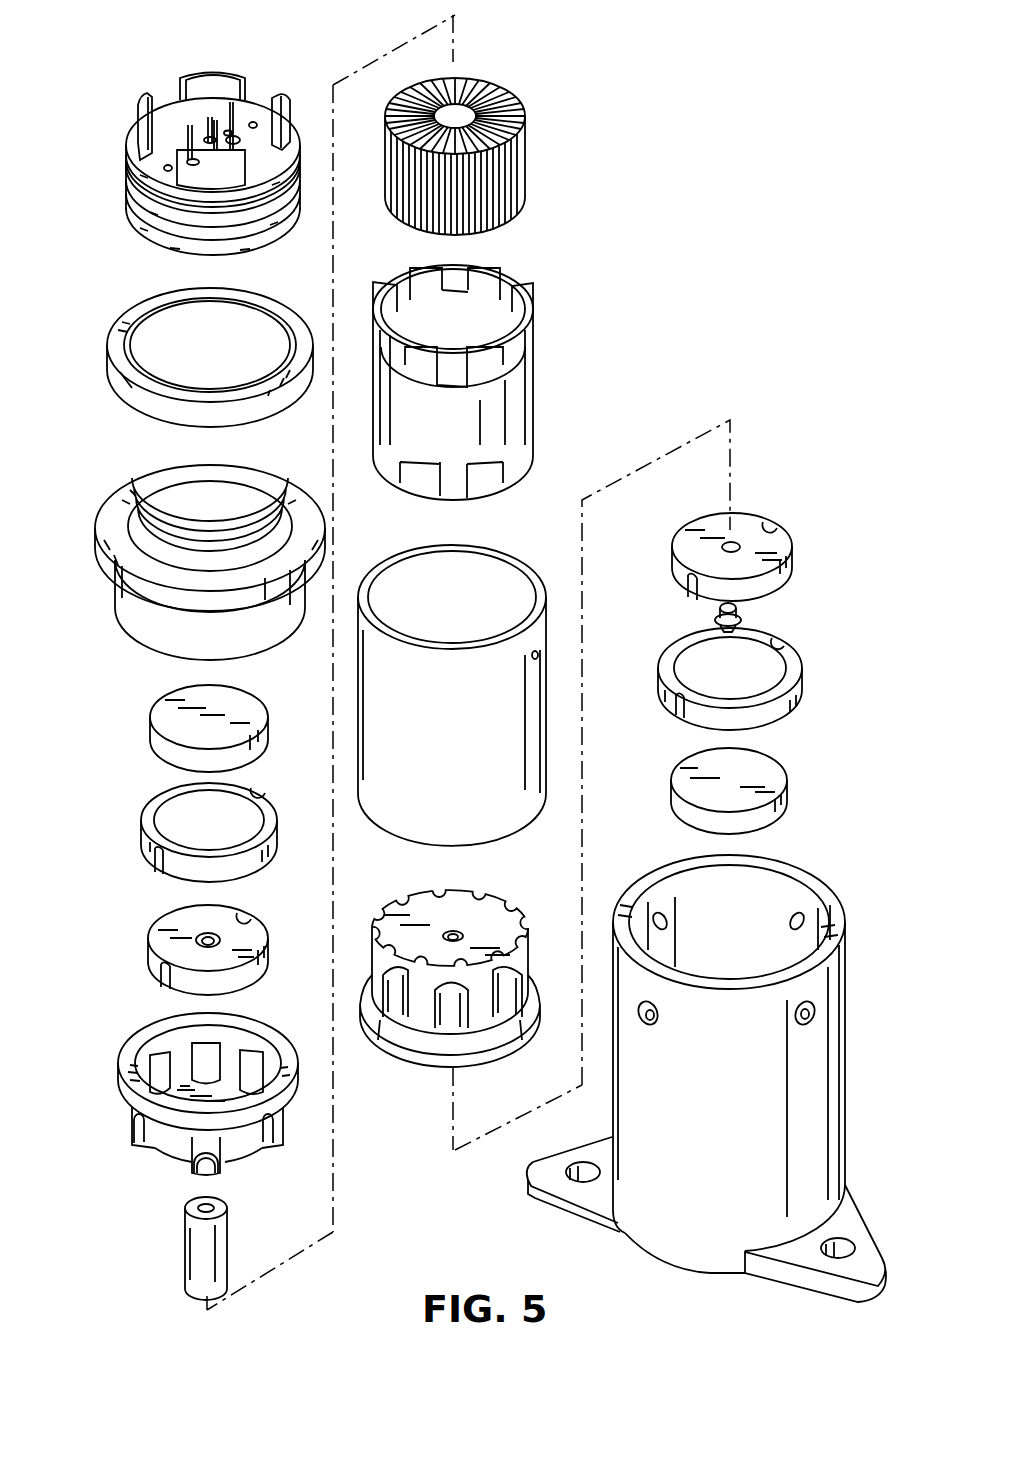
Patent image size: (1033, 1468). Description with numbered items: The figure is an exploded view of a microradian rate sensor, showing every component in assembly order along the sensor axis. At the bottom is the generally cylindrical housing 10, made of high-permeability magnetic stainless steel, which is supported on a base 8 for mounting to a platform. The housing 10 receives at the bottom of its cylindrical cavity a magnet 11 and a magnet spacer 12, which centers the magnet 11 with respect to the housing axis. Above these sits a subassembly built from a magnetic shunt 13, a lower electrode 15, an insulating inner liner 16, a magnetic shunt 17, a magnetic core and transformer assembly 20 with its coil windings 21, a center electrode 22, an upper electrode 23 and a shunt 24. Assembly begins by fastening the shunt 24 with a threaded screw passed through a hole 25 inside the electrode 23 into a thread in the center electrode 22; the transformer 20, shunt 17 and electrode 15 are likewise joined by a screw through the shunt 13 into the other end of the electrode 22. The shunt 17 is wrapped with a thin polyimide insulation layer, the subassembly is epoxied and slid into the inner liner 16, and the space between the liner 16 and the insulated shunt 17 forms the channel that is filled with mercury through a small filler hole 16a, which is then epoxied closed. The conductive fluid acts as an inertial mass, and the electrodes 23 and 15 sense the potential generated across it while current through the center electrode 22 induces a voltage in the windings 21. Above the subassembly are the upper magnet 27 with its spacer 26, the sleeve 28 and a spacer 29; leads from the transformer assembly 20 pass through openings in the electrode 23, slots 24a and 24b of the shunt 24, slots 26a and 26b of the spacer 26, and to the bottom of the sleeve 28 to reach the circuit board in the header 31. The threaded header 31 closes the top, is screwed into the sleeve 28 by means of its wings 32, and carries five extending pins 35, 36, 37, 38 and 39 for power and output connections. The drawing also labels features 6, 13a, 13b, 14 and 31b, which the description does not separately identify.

The mounting hole 6 is at (582, 1182).
The base 8 is at (860, 1232).
The cylindrical housing 10 is at (848, 1005).
The magnet 11 is at (788, 797).
The magnet spacer 12 is at (802, 690).
The magnetic shunt 13 is at (796, 562).
The notch of support disc 13a is at (772, 527).
The slot of support disc 13b is at (688, 590).
The rivet 14 is at (745, 618).
The electrode 15 is at (388, 1055).
The inner liner 16 is at (462, 545).
The filler hole 16a is at (538, 658).
The magnetic shunt 17 is at (535, 395).
The transformer 20 is at (520, 106).
The coil windings 21 is at (522, 175).
The center electrode 22 is at (185, 1258).
The electrode 23 is at (120, 1090).
The shunt 24 is at (150, 938).
The slot 24a is at (160, 980).
The slot 24b is at (248, 918).
The hole 25 is at (213, 935).
The spacer 26 is at (142, 822).
The slot 26a is at (155, 866).
The slot 26b is at (258, 795).
The magnet 27 is at (150, 740).
The sleeve 28 is at (118, 610).
The spacer 29 is at (152, 415).
The threaded header 31 is at (140, 226).
The thread 31b is at (290, 205).
The wings 32 is at (140, 104).
The extending pin 35 is at (232, 128).
The extending pin 36 is at (233, 120).
The extending pin 37 is at (207, 118).
The extending pin 38 is at (188, 130).
The extending pin 39 is at (214, 125).